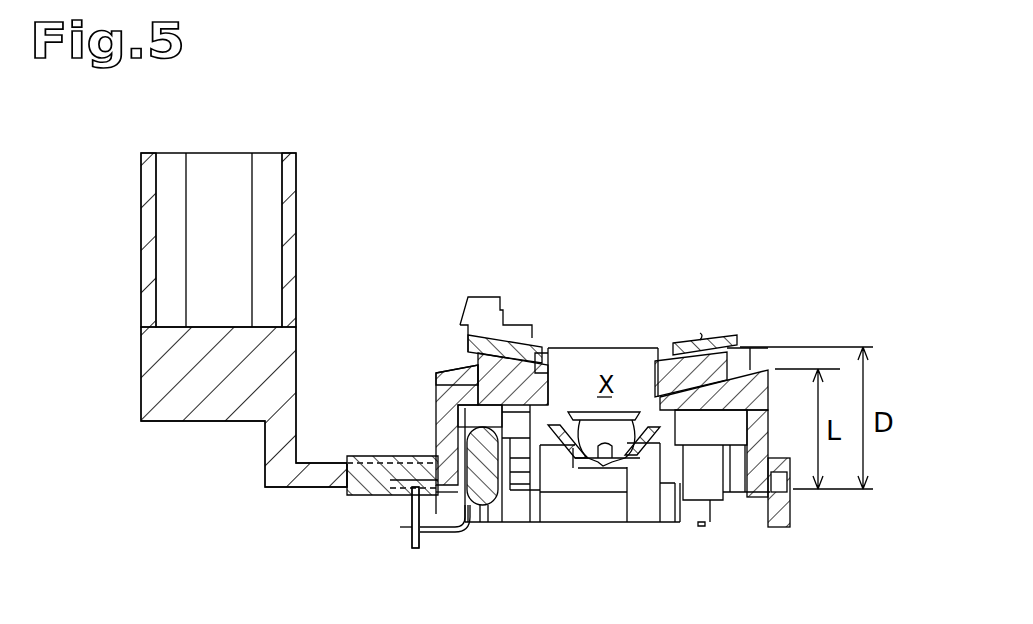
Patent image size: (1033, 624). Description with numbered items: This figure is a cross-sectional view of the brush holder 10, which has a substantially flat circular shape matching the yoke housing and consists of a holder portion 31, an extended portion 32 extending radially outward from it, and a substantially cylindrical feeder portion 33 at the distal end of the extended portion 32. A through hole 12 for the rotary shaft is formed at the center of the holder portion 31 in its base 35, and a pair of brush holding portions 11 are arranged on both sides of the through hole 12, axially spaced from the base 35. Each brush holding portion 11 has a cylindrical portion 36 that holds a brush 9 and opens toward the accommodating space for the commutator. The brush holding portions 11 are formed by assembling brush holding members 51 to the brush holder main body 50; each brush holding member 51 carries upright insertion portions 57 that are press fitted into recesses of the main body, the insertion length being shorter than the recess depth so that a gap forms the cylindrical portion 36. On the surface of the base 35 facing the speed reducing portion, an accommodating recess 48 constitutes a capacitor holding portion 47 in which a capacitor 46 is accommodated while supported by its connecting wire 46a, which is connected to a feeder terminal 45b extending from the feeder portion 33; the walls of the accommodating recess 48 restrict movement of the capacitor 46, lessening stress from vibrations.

The brush holder 10 is at (790, 203).
The feeder portion 33 is at (298, 170).
The extended portion 32 is at (334, 466).
The brush holding portion 11 is at (463, 336).
The cylindrical portion 36 is at (521, 338).
The brush 9 is at (458, 355).
The insertion portion 57 is at (437, 386).
The capacitor holding portion 47 is at (472, 413).
The accommodating recess 48 is at (437, 432).
The base 35 is at (566, 420).
The capacitor 46 is at (484, 478).
The through hole 12 is at (603, 472).
The holder portion 31 is at (655, 523).
The brush holding member 51 is at (755, 497).
The brush holder main body 50 is at (350, 497).
The connecting wire 46a is at (432, 533).
The feeder terminal 45b is at (415, 549).